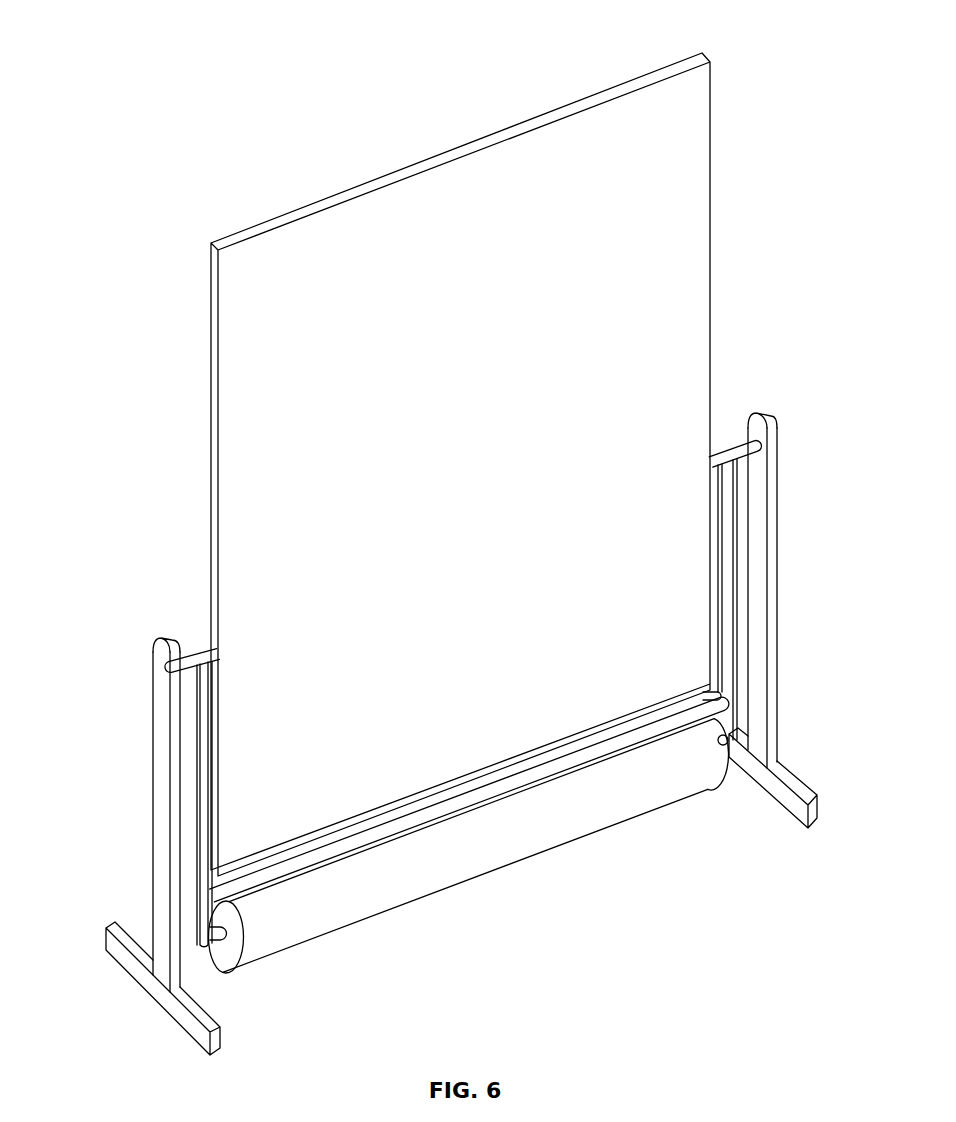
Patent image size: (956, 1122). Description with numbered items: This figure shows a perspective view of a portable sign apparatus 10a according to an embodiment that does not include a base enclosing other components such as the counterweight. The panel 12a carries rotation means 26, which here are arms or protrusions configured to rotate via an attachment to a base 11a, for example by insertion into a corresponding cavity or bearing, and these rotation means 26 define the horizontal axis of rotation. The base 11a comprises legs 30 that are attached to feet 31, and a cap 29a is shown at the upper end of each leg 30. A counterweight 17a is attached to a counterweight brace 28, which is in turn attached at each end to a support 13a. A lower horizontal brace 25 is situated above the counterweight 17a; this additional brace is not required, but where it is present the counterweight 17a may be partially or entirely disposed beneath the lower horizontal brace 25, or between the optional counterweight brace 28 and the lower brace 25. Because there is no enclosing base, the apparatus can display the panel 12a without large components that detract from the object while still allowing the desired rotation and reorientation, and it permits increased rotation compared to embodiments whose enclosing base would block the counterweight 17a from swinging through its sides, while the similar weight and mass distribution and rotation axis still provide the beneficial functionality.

The portable sign apparatus 10a is at (128, 44).
The panel 12a is at (697, 136).
The base 11a is at (459, 700).
The legs 30 is at (160, 800).
The rounded cap 29a is at (180, 662).
The feet 31 is at (138, 970).
The rotation means 26 is at (200, 648).
The support 13a is at (206, 790).
The lower horizontal brace 25 is at (687, 718).
The counterweight brace 28 is at (215, 948).
The counterweight 17a is at (501, 848).